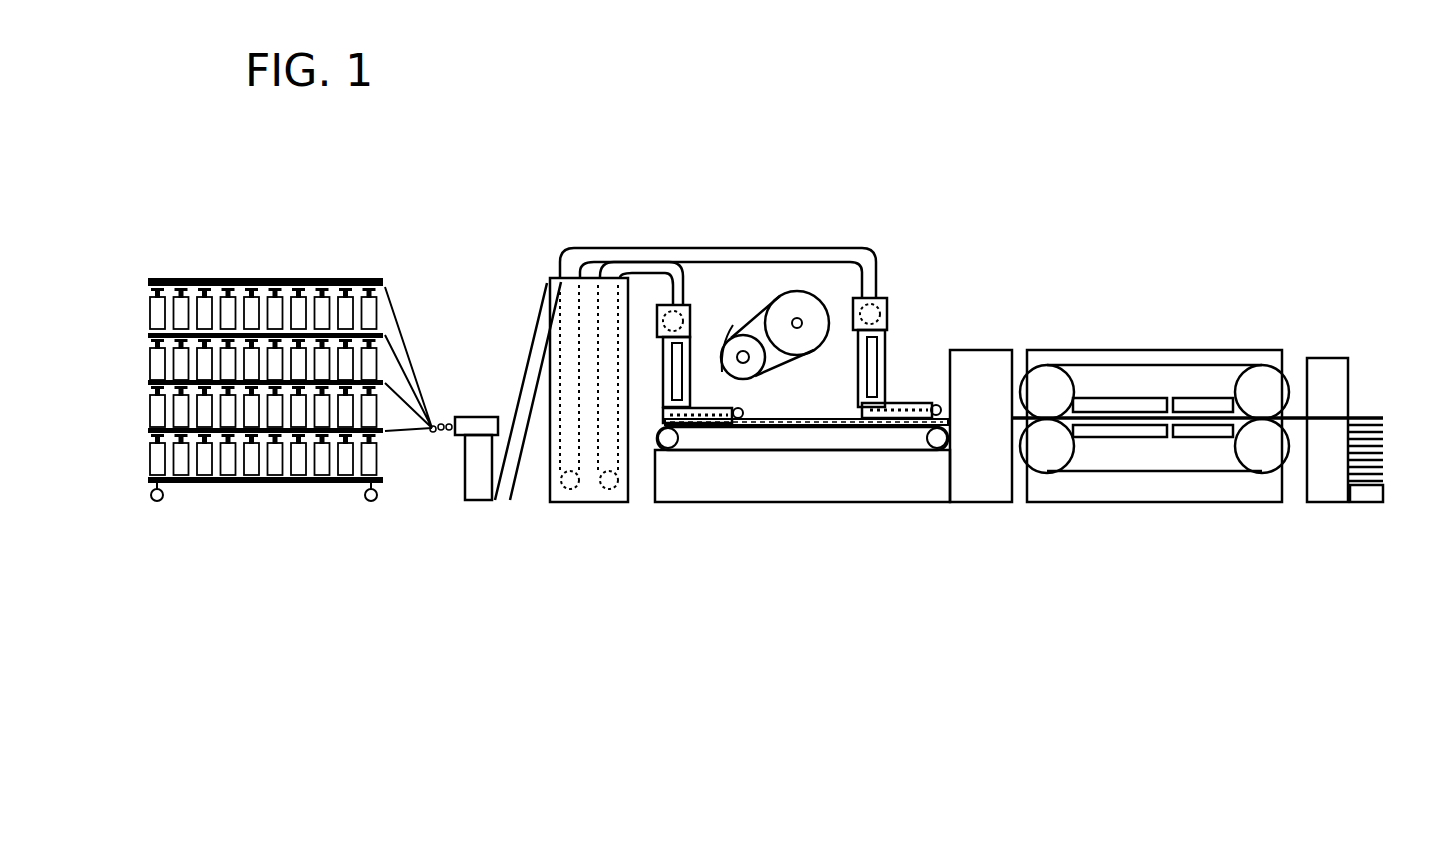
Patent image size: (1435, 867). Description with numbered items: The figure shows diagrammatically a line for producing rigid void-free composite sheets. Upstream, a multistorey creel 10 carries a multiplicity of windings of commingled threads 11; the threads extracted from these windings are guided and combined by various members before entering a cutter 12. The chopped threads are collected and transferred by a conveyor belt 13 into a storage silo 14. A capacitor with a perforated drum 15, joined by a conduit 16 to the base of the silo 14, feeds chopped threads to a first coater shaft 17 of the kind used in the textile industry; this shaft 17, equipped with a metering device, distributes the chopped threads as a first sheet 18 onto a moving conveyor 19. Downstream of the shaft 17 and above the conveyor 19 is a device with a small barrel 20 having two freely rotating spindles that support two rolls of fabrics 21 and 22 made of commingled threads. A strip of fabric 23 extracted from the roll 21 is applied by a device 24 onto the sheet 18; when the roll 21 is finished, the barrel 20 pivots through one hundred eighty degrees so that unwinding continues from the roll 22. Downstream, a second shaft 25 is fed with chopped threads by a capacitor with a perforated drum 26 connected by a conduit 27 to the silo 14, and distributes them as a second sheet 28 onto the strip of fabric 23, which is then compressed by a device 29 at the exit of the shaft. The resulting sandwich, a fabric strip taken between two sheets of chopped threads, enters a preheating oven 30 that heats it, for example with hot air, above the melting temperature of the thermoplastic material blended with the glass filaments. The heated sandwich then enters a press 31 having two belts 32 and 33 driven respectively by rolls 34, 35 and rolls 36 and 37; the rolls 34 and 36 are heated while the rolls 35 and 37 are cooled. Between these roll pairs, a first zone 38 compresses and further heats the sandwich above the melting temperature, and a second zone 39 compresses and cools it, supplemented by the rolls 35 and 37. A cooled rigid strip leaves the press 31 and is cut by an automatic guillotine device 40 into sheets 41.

The multistorey creel 10 is at (258, 487).
The windings of commingled threads 11 is at (150, 367).
The cutter 12 is at (463, 415).
The conveyor belt 13 is at (527, 360).
The storage silo 14 is at (580, 492).
The capacitor with a perforated drum 15 is at (727, 377).
The conduit 16 is at (640, 255).
The first coater shaft 17 is at (648, 350).
The first sheet 18 is at (787, 425).
The moving conveyor 19 is at (840, 450).
The small barrel 20 is at (745, 330).
The roll of fabric 21 is at (752, 368).
The roll of fabric 22 is at (797, 310).
The strip of fabric 23 is at (733, 325).
The device 24 is at (745, 418).
The second shaft 25 is at (848, 365).
The capacitor with a perforated drum 26 is at (893, 307).
The conduit 27 is at (847, 247).
The second sheet 28 is at (938, 405).
The device 29 is at (932, 403).
The preheating oven 30 is at (977, 490).
The press 31 is at (1184, 332).
The belt 32 is at (1125, 367).
The belt 33 is at (1167, 473).
The roll 34 is at (1043, 387).
The roll 35 is at (1258, 383).
The roll 36 is at (1047, 455).
The roll 37 is at (1263, 460).
The first zone 38 is at (1117, 437).
The second zone 39 is at (1203, 437).
The automatic guillotine device 40 is at (1325, 380).
The sheets 41 is at (1395, 468).